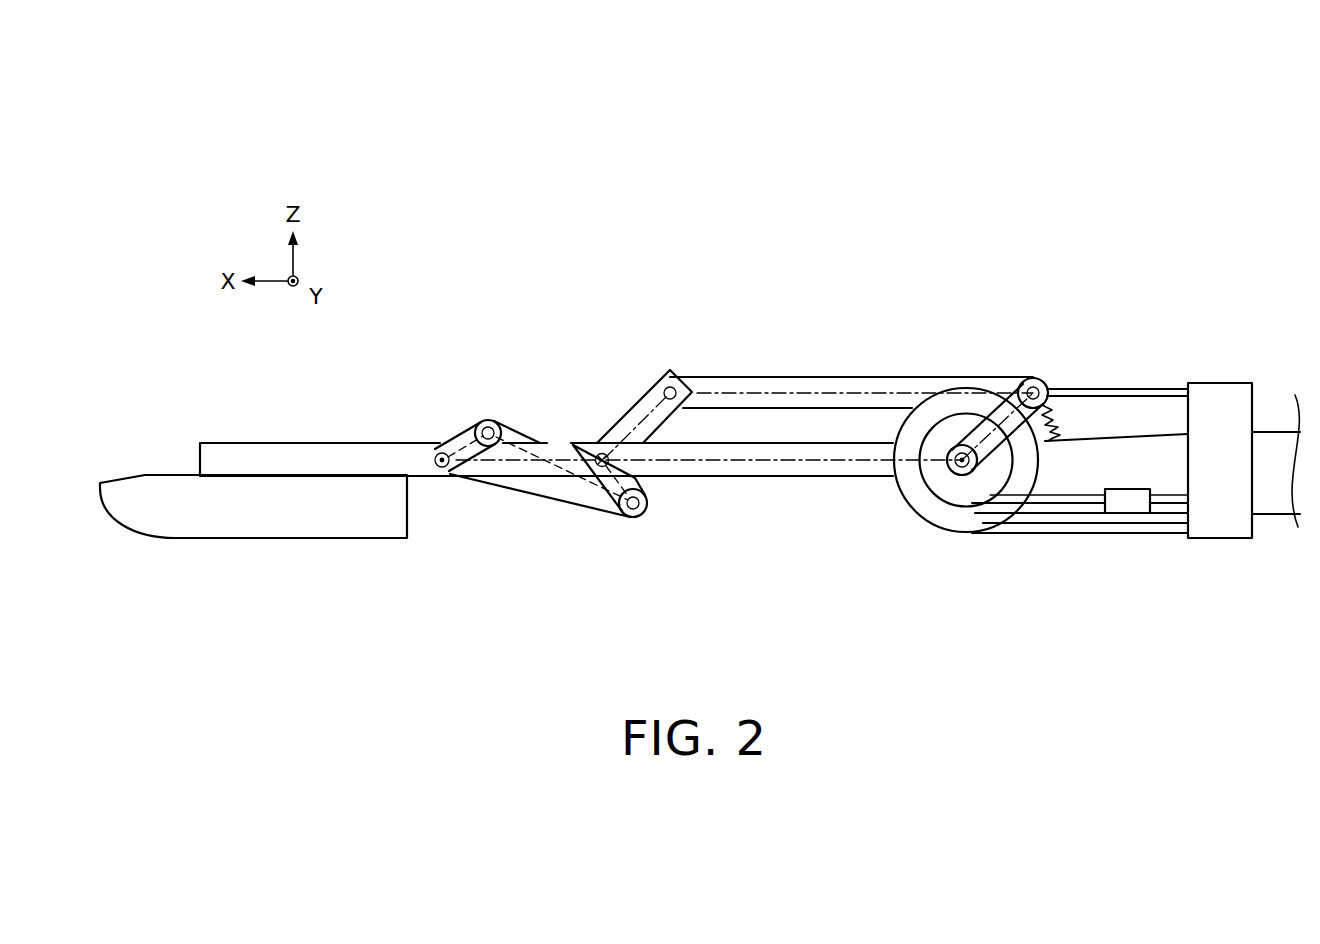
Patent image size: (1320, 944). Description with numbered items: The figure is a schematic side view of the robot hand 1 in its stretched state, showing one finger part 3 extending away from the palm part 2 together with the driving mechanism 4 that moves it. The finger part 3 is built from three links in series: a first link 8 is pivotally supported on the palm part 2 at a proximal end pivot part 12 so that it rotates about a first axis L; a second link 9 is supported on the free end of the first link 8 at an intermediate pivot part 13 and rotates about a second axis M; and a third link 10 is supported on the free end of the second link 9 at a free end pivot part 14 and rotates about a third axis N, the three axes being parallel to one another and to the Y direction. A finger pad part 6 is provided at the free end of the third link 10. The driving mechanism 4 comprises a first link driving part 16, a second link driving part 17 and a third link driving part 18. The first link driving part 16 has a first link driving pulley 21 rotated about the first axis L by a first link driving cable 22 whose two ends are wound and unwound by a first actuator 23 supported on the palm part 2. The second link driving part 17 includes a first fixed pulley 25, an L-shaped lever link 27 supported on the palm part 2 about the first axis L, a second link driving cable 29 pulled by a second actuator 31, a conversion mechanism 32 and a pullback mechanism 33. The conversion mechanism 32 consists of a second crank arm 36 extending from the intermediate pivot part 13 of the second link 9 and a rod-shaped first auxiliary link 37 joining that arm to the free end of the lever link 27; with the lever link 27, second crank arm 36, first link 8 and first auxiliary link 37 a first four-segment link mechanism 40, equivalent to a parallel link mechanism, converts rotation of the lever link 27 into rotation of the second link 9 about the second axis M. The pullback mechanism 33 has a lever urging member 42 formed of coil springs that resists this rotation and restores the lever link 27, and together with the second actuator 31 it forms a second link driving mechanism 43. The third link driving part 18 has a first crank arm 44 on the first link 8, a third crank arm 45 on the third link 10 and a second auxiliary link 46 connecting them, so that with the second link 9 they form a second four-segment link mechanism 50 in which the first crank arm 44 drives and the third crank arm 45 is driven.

The robot hand 1 is at (1078, 164).
The palm part 2 is at (1244, 442).
The finger part 3 is at (919, 480).
The driving mechanism 4 is at (1136, 461).
The finger pad part 6 is at (253, 531).
The first link 8 is at (805, 497).
The second link 9 is at (513, 498).
The third link 10 is at (546, 430).
The proximal end pivot part 12 is at (949, 387).
The intermediate pivot part 13 is at (621, 457).
The free end pivot part 14 is at (446, 449).
The first link driving part 16 is at (980, 589).
The second link driving part 17 is at (851, 345).
The third link driving part 18 is at (540, 423).
The first link driving pulley 21 is at (944, 463).
The first link driving cable 22 is at (1117, 357).
The first actuator 23 is at (1222, 558).
The first fixed pulley 25 is at (964, 404).
The lever link 27 is at (1039, 360).
The second link driving cable 29 is at (1080, 544).
The second actuator 31 is at (1139, 550).
The conversion mechanism 32 is at (815, 348).
The pullback mechanism 33 is at (1116, 519).
The second crank arm 36 is at (644, 390).
The first auxiliary link 37 is at (742, 349).
The first four-segment link mechanism 40 is at (709, 509).
The lever urging member 42 is at (1082, 387).
The second link driving mechanism 43 is at (1080, 573).
The first crank arm 44 is at (663, 504).
The third crank arm 45 is at (468, 420).
The second auxiliary link 46 is at (589, 496).
The second four-segment link mechanism 50 is at (477, 509).
The third axis N is at (436, 493).
The second axis M is at (599, 511).
The first axis L is at (941, 529).